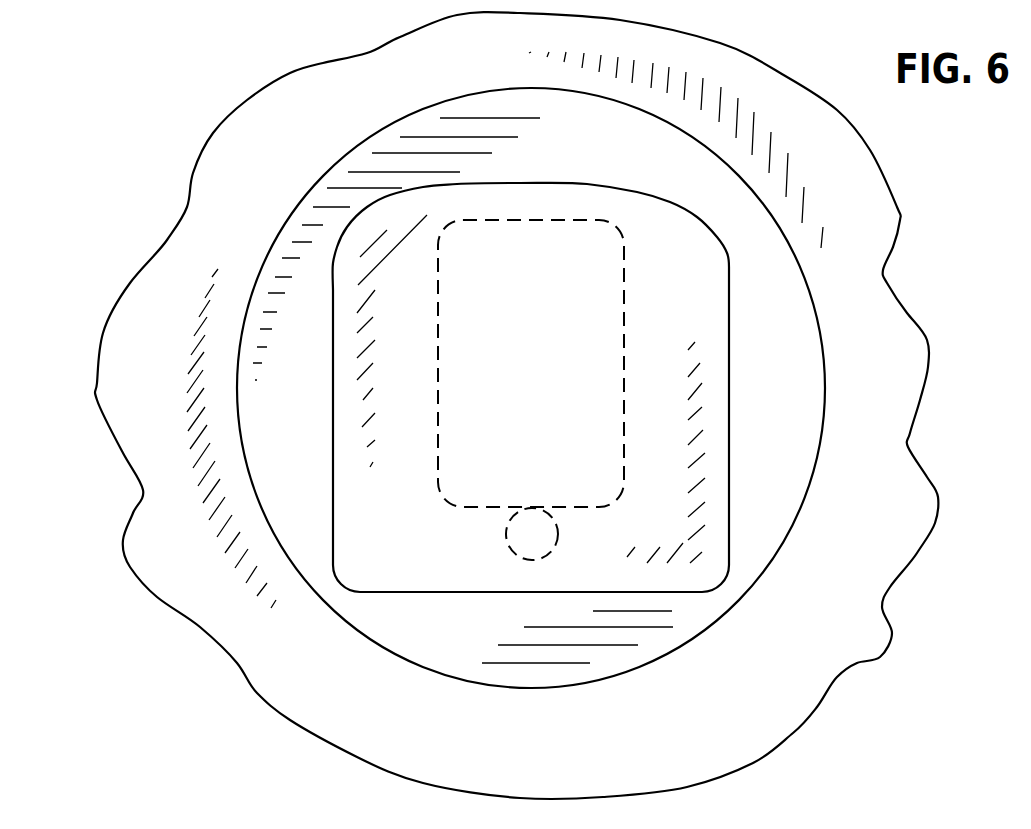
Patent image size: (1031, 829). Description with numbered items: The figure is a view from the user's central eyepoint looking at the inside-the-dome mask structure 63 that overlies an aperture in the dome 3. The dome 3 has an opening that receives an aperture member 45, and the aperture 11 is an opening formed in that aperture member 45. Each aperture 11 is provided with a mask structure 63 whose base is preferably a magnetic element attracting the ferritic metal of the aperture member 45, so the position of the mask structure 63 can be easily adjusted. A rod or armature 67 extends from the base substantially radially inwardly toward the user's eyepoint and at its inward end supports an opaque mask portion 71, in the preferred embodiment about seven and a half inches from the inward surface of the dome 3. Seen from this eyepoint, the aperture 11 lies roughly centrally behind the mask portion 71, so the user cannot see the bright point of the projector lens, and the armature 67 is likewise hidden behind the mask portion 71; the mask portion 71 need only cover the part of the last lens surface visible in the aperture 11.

The dome 3 is at (877, 625).
The aperture member 45 is at (803, 462).
The opaque mask portion 71 is at (712, 572).
The aperture 11 is at (612, 308).
The rod or armature 67 is at (508, 548).
The inside-the-dome mask structure 63 is at (407, 597).